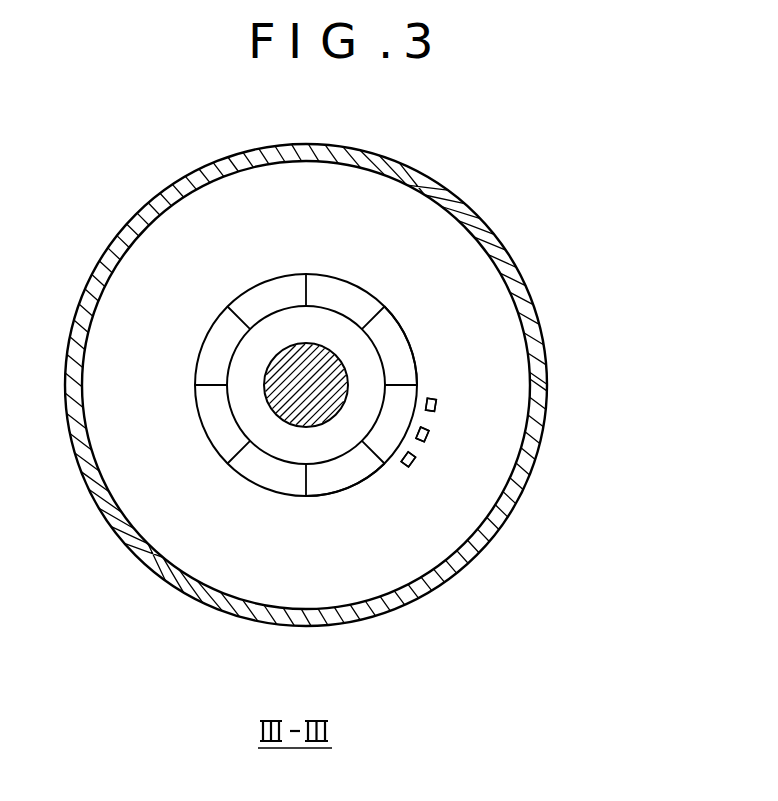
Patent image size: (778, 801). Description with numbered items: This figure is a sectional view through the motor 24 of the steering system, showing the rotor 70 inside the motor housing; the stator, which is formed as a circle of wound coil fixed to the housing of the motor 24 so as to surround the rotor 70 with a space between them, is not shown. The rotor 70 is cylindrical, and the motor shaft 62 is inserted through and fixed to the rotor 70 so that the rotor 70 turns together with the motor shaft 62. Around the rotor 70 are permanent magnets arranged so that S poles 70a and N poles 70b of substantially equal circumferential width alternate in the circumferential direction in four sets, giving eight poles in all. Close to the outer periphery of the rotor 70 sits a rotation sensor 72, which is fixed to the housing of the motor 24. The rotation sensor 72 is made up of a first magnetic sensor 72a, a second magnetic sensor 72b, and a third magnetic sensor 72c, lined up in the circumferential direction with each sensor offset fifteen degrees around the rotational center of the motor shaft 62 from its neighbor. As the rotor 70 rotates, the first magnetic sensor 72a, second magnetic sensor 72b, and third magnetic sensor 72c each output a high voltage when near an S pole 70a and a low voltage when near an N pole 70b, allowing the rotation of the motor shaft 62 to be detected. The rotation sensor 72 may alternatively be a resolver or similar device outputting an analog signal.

The motor 24 is at (513, 188).
The rotor 70 is at (363, 285).
The S pole 70a is at (413, 347).
The N pole 70b is at (400, 467).
The motor shaft 62 is at (276, 410).
The rotation sensor 72 is at (625, 438).
The first magnetic sensor 72a is at (415, 461).
The second magnetic sensor 72b is at (429, 433).
The third magnetic sensor 72c is at (437, 405).